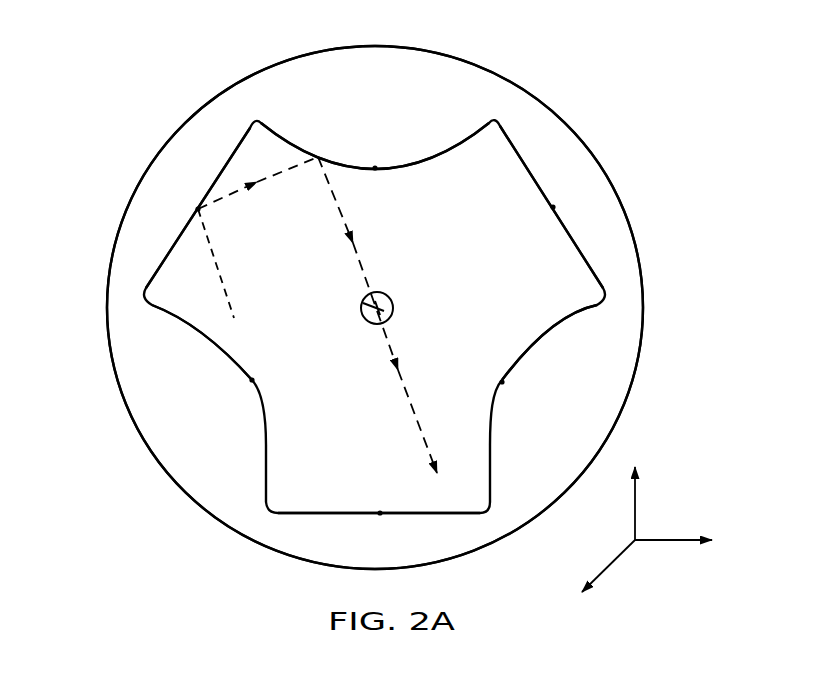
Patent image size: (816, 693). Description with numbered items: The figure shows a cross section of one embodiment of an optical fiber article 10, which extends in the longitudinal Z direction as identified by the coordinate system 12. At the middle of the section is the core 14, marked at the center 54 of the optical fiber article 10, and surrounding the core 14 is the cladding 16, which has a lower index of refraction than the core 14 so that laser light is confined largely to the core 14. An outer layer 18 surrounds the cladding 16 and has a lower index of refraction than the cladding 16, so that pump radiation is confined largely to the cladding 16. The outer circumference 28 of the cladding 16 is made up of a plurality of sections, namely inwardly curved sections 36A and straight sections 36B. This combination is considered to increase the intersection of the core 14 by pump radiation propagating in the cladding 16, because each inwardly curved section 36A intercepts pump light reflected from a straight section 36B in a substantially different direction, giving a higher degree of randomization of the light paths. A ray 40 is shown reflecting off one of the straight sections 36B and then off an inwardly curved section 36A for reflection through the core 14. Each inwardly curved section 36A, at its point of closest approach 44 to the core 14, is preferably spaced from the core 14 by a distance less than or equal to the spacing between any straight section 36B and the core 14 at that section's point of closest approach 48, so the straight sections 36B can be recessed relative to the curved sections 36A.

The optical fiber article 10 is at (155, 113).
The coordinate system 12 is at (645, 555).
The core 14 is at (393, 308).
The cladding 16 is at (305, 423).
The outer layer 18 is at (593, 395).
The outer circumference 28 is at (291, 136).
The inwardly curved section 36A is at (408, 145).
The straight section 36B is at (153, 248).
The ray 40 is at (424, 390).
The point of closest approach 44 is at (375, 168).
The point of closest approach 48 is at (198, 209).
The center 54 is at (366, 320).